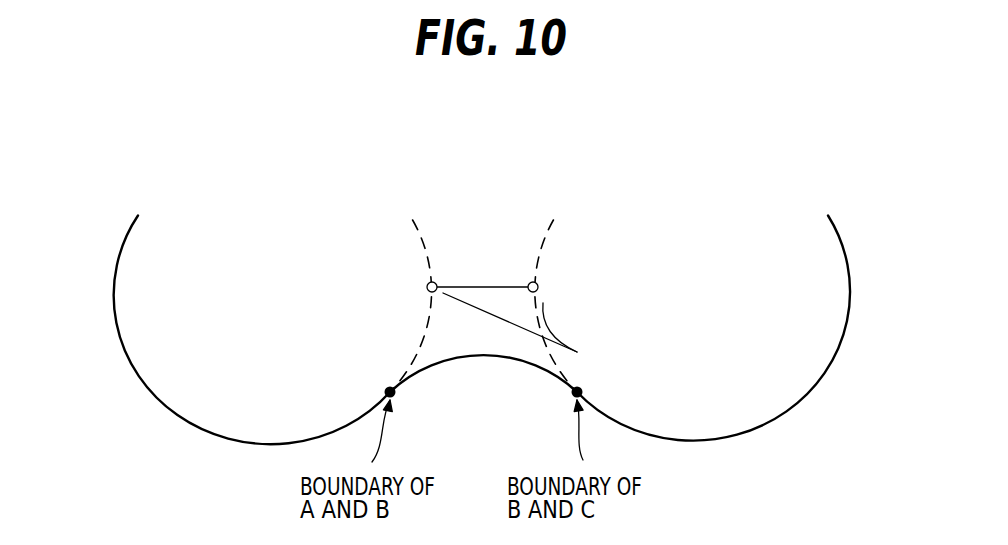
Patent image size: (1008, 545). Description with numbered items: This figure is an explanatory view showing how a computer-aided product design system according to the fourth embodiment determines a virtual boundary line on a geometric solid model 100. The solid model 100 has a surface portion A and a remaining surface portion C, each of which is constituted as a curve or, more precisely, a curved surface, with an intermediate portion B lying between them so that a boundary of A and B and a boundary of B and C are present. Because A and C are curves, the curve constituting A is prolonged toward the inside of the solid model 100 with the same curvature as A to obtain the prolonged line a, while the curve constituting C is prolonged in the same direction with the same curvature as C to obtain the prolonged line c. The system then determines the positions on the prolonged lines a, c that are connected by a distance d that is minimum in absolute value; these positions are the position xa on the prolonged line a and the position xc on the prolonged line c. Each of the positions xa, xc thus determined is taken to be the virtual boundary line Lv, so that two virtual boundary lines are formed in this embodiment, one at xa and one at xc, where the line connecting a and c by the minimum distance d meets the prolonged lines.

The solid model 100 is at (452, 337).
The portion of surface A is at (120, 308).
The portion B is at (481, 356).
The rest of surface C is at (848, 296).
The prolonged line a is at (427, 245).
The prolonged line c is at (535, 262).
The minimum distance d is at (466, 283).
The position xa is at (427, 287).
The position xc is at (540, 286).
The virtual boundary line Lv is at (443, 293).